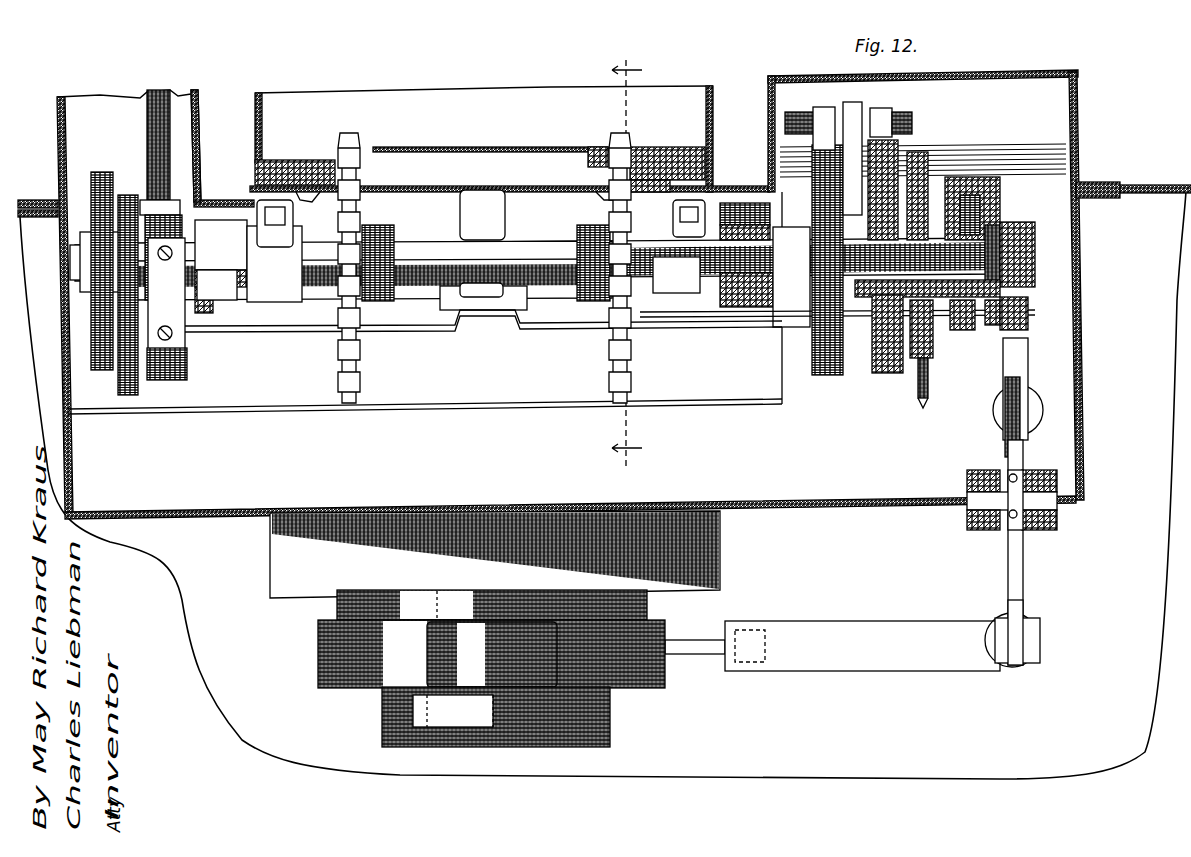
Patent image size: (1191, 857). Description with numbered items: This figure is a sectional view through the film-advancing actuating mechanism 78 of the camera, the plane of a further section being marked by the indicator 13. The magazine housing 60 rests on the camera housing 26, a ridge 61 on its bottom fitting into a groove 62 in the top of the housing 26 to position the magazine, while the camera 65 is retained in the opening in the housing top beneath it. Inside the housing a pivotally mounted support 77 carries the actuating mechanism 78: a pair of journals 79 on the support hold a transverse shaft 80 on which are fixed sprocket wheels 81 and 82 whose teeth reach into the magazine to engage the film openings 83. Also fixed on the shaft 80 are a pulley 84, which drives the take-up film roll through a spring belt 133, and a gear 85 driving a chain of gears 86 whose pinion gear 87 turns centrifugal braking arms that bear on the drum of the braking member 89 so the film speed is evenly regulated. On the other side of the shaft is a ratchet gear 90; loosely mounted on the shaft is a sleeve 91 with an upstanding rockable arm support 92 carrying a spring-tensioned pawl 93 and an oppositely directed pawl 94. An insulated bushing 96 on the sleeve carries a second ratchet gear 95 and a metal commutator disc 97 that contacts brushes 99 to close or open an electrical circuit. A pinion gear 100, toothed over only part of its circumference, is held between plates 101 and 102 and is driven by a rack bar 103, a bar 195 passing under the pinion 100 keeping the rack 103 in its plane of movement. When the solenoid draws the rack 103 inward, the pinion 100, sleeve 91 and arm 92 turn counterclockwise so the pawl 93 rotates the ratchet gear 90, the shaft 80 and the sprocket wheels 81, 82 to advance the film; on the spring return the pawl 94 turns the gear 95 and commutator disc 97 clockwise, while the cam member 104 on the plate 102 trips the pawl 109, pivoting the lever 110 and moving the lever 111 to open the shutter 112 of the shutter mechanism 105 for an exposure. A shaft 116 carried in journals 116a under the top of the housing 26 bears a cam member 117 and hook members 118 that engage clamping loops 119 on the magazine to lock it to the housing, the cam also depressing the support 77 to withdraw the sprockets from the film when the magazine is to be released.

The section line 13- 13 is at (627, 258).
The housing 26 is at (1156, 185).
The magazine housing 60 is at (712, 95).
The ridge 61 is at (304, 160).
The groove 62 is at (308, 200).
The camera 65 is at (495, 554).
The support 77 is at (270, 330).
The actuating mechanism 78 is at (975, 170).
The journals 79 is at (745, 290).
The transverse shaft 80 is at (550, 290).
The sprocket wheel 81 is at (349, 403).
The sprocket wheel 82 is at (620, 403).
The film openings 83 is at (338, 140).
The pulley 84 is at (199, 190).
The gear 85 is at (100, 172).
The chain of gears 86 is at (128, 195).
The pinion gear 87 is at (140, 296).
The braking member 89 is at (185, 378).
The ratchet gear 90 is at (825, 375).
The sleeve 91 is at (905, 230).
The rockable arm support 92 is at (852, 102).
The pawl 93 is at (824, 107).
The pawl 94 is at (882, 108).
The ratchet gear 95 is at (882, 373).
The insulated bushing 96 is at (905, 283).
The commutator disc 97 is at (920, 152).
The brush 99 is at (925, 365).
The pinion gear 100 is at (1000, 205).
The plate 101 is at (935, 330).
The plate 102 is at (996, 325).
The rack bar 103 is at (985, 185).
The cam member 104 is at (1030, 312).
The shutter mechanism 105 is at (975, 470).
The pawl 109 is at (1030, 362).
The lever 110 is at (1023, 570).
The lever 111 is at (1000, 620).
The shutter 112 is at (712, 656).
The shaft 116 is at (430, 300).
The journals 116a is at (735, 203).
The cam member 117 is at (503, 214).
The hook members 118 is at (258, 205).
The clamping loops 119 is at (287, 230).
The spring belt 133 is at (160, 90).
The bar 195 is at (962, 318).